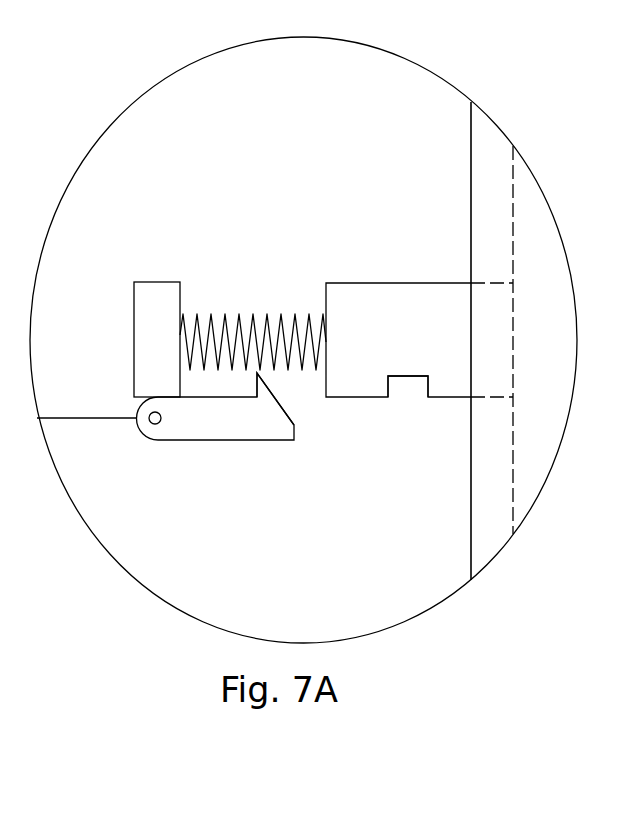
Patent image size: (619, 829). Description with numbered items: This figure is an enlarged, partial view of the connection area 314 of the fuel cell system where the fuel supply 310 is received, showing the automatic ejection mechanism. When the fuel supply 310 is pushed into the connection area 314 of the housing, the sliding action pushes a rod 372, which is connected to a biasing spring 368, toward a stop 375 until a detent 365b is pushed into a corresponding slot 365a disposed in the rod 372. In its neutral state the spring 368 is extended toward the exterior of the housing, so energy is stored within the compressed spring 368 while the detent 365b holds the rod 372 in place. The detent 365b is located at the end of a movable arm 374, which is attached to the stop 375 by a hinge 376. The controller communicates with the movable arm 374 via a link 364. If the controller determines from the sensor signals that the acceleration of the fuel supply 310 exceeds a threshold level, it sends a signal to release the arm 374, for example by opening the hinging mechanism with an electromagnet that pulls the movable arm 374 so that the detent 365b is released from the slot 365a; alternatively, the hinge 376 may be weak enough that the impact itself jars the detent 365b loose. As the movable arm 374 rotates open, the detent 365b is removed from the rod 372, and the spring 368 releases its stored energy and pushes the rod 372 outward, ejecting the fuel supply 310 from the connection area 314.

The fuel supply 310 is at (527, 332).
The connection area 314 is at (487, 520).
The link 364 is at (92, 418).
The slot 365a is at (407, 380).
The detent 365b is at (275, 384).
The biasing spring 368 is at (228, 312).
The rod 372 is at (389, 344).
The movable arm 374 is at (227, 432).
The stop 375 is at (155, 293).
The hinge 376 is at (158, 422).